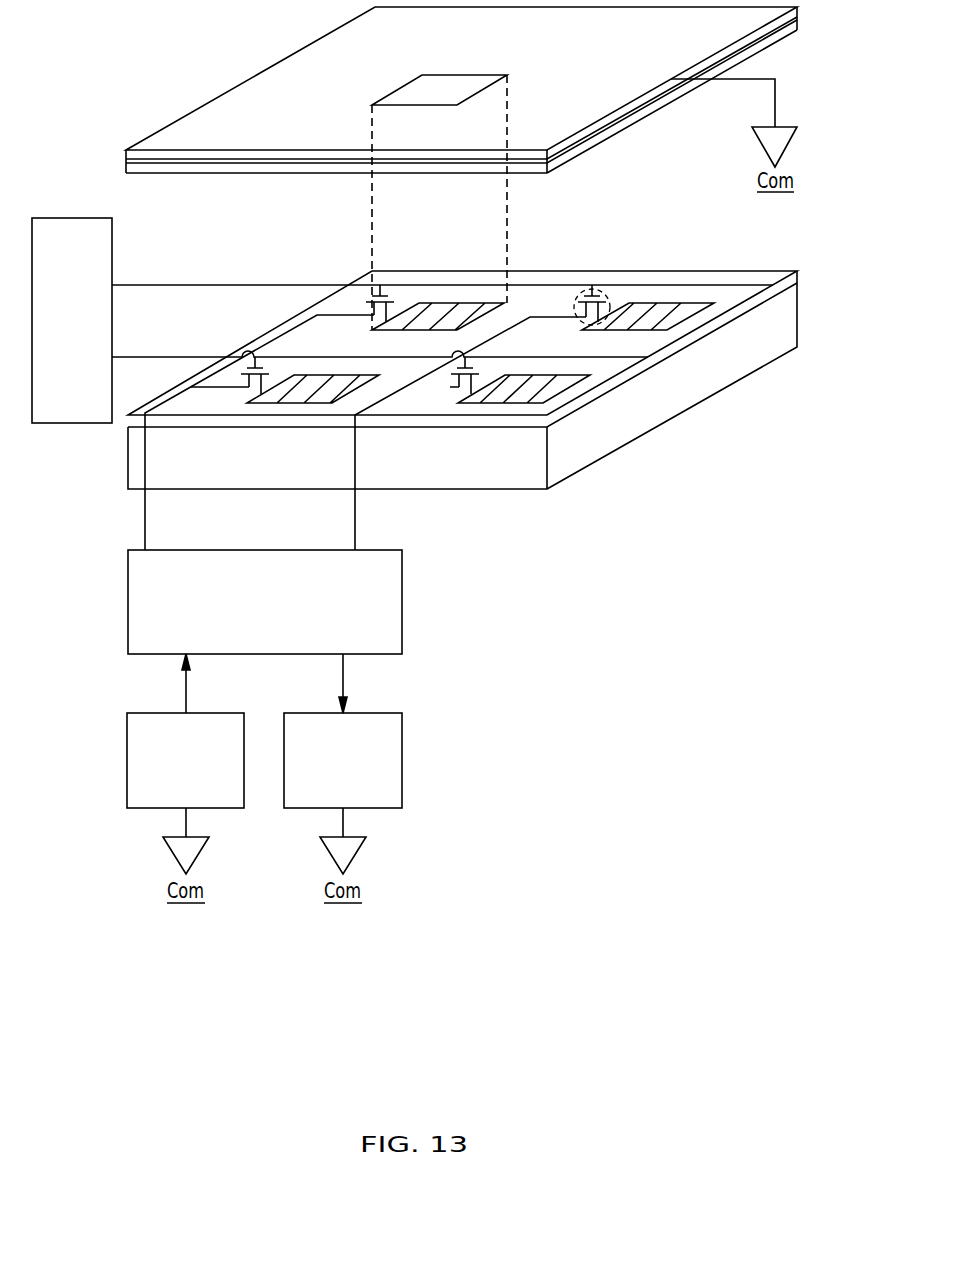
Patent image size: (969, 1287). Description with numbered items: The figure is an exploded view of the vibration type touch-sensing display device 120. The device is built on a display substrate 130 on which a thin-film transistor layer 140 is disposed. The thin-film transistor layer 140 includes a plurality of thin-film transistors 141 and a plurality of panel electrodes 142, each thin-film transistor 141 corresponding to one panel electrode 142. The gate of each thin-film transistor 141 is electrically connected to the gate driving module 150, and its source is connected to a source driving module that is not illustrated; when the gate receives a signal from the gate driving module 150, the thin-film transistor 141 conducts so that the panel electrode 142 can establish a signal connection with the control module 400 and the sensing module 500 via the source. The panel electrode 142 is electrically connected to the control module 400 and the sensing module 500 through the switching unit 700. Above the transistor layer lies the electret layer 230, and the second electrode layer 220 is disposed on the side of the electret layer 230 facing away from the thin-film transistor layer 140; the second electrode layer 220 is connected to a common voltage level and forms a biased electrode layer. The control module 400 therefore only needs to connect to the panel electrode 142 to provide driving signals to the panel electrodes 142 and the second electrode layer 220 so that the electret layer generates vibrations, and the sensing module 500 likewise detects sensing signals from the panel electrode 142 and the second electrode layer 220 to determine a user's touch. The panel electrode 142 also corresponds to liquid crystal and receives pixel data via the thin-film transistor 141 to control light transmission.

The vibration type touch-sensing display device 120 is at (454, 471).
The display substrate 130 is at (520, 472).
The thin-film transistor layer 140 is at (520, 420).
The thin-film transistor 141 is at (595, 290).
The panel electrode 142 is at (663, 313).
The gate driving module 150 is at (84, 333).
The second electrode layer 220 is at (427, 90).
The electret layer 230 is at (153, 167).
The control module 400 is at (202, 773).
The sensing module 500 is at (360, 773).
The switching unit 700 is at (277, 621).